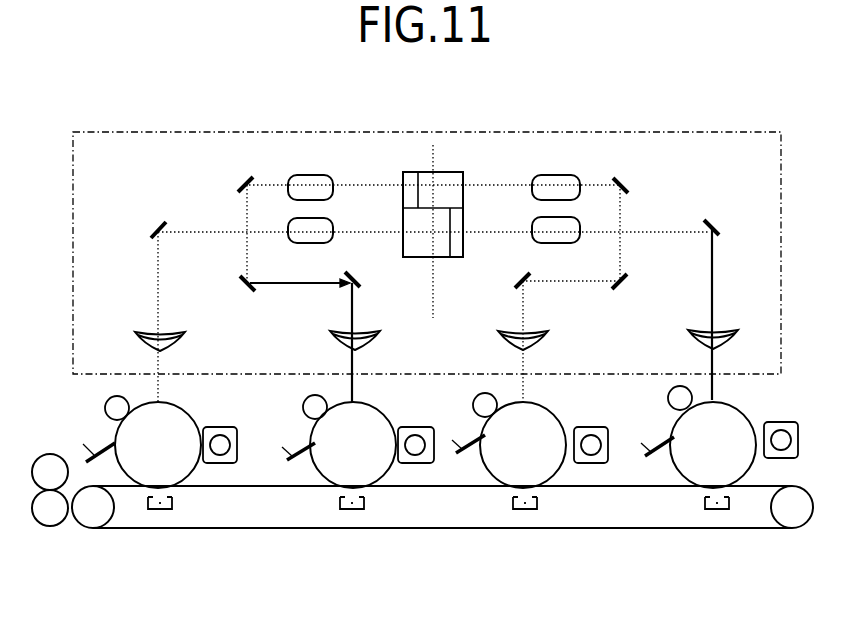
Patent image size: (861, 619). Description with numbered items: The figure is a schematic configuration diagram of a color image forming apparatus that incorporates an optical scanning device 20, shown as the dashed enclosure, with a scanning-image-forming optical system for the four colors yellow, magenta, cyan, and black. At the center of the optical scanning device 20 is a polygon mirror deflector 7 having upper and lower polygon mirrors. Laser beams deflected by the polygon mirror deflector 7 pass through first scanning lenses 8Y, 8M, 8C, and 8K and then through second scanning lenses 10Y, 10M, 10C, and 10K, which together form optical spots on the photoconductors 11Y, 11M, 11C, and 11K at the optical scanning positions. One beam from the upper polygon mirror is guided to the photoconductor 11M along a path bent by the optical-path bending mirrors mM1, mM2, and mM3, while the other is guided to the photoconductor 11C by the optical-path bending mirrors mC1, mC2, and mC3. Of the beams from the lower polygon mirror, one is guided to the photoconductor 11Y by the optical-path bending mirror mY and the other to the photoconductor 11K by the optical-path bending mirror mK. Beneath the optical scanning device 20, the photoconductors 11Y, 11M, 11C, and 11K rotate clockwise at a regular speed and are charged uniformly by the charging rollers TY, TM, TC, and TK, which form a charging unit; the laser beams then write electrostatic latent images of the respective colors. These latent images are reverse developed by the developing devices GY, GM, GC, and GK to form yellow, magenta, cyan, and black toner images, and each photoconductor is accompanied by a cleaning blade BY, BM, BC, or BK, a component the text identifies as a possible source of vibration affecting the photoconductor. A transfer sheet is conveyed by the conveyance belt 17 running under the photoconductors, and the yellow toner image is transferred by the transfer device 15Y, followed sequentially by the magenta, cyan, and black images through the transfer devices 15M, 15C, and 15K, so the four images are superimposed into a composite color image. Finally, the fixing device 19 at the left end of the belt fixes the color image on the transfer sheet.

The polygon mirror deflector 7 is at (445, 171).
The first scanning lens 8C is at (325, 175).
The first scanning lens 8K is at (323, 242).
The first scanning lens 8M is at (548, 176).
The first scanning lens 8Y is at (565, 243).
The second scanning lens 10K is at (188, 334).
The second scanning lens 10C is at (382, 335).
The second scanning lens 10M is at (550, 335).
The second scanning lens 10Y is at (686, 333).
The photoconductor 11K is at (158, 445).
The photoconductor 11C is at (353, 445).
The photoconductor 11M is at (523, 445).
The photoconductor 11Y is at (713, 445).
The transfer device 15K is at (174, 503).
The transfer device 15C is at (339, 500).
The transfer device 15M is at (512, 500).
The transfer device 15Y is at (704, 500).
The conveyance belt 17 is at (560, 529).
The fixing device 19 is at (40, 458).
The optical scanning device 20 is at (783, 216).
The optical-path bending mirror mK is at (158, 221).
The optical-path bending mirror mC1 is at (237, 190).
The optical-path bending mirror mC2 is at (252, 300).
The optical-path bending mirror mC3 is at (361, 290).
The optical-path bending mirror mM1 is at (626, 181).
The optical-path bending mirror mM2 is at (626, 288).
The optical-path bending mirror mM3 is at (520, 276).
The optical-path bending mirror mY is at (720, 215).
The charging roller TK is at (104, 403).
The charging roller TC is at (303, 401).
The charging roller TM is at (473, 406).
The charging roller TY is at (668, 396).
The developing device GK is at (219, 426).
The developing device GC is at (412, 426).
The developing device GM is at (589, 426).
The developing device GY is at (782, 421).
The cleaning blade BK is at (88, 444).
The cleaning blade BC is at (288, 443).
The cleaning blade BM is at (467, 459).
The cleaning blade BY is at (648, 458).